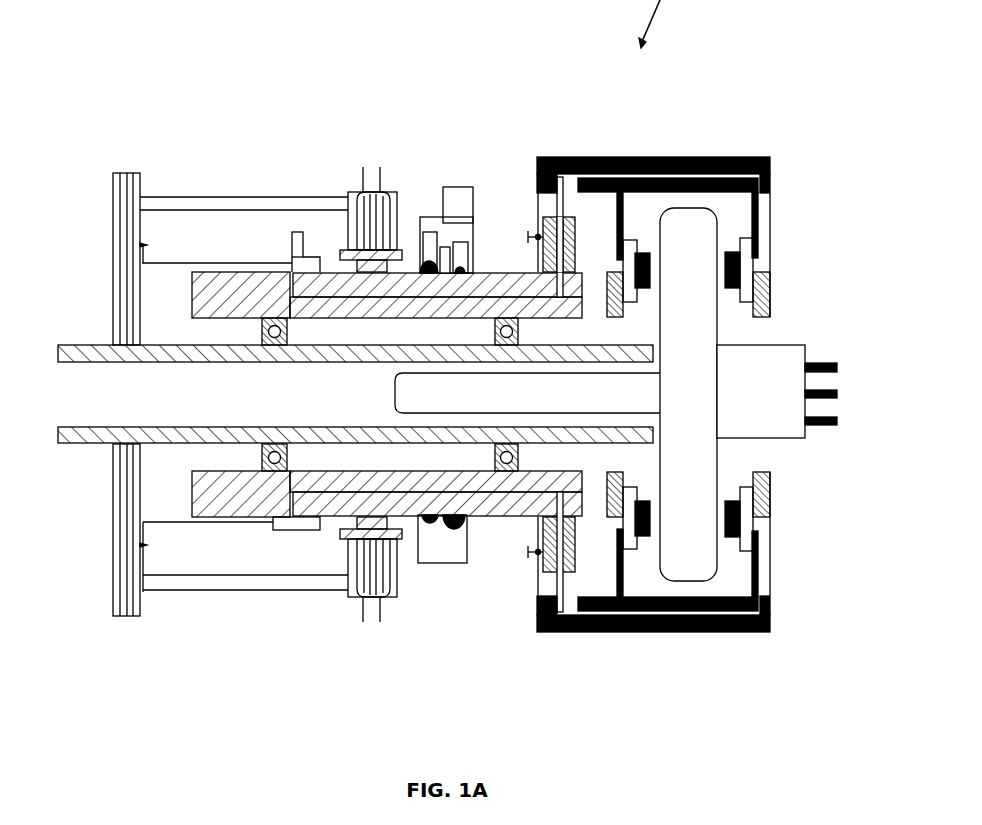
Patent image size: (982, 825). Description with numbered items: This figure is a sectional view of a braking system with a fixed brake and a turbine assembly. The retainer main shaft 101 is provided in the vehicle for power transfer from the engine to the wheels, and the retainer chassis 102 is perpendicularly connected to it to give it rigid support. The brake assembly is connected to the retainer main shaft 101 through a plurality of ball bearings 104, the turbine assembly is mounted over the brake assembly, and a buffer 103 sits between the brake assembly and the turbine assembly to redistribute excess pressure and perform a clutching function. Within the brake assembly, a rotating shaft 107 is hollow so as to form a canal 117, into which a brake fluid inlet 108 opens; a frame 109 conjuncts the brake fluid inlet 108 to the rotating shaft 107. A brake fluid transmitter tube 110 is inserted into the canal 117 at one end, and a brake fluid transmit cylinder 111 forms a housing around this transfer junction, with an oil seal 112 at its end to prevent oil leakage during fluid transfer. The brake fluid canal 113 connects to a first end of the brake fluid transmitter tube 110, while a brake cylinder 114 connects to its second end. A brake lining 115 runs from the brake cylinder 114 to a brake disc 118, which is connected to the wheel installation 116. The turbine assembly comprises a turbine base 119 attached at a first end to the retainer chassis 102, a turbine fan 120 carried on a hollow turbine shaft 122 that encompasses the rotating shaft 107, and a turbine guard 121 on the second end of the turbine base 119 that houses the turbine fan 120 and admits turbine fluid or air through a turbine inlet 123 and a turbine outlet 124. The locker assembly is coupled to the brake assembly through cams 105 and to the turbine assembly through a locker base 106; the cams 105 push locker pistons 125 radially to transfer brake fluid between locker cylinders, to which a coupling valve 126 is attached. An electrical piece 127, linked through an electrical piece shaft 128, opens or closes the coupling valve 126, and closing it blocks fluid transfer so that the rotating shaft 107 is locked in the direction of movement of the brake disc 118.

The retainer main shaft 101 is at (82, 345).
The retainer chassis 102 is at (126, 173).
The buffer 103 is at (333, 527).
The ball bearings 104 is at (262, 452).
The cams 105 is at (460, 530).
The locker base 106 is at (403, 245).
The rotating shaft 107 is at (195, 290).
The brake fluid inlet 108 is at (298, 232).
The frame 109 is at (283, 258).
The brake fluid transmitter tube 110 is at (560, 217).
The brake fluid transmit cylinder 111 is at (578, 550).
The oil seal 112 is at (572, 222).
The brake fluid canal 113 is at (657, 173).
The brake cylinder 114 is at (757, 255).
The brake lining 115 is at (740, 276).
The wheel installation 116 is at (818, 363).
The canal 117 is at (482, 492).
The brake disc 118 is at (717, 447).
The turbine base 119 is at (306, 197).
The turbine fan 120 is at (362, 230).
The turbine guard 121 is at (382, 192).
The turbine shaft 122 is at (340, 530).
The turbine inlet 123 is at (370, 168).
The turbine outlet 124 is at (372, 623).
The locker piston 125 is at (530, 237).
The coupling valve 126 is at (447, 187).
The electrical piece 127 is at (466, 187).
The electrical piece shaft 128 is at (476, 203).